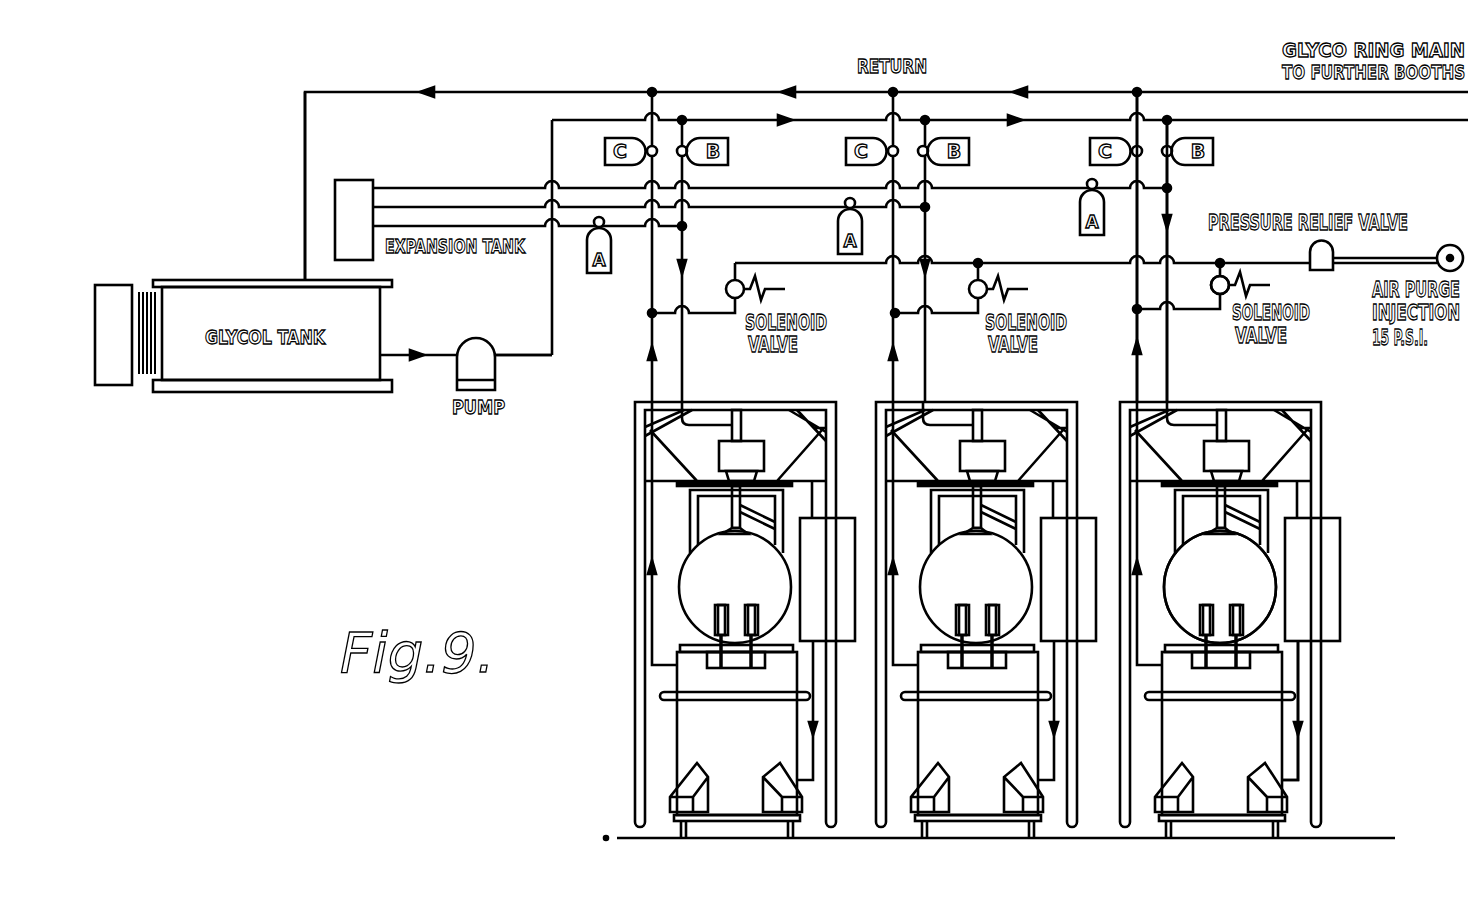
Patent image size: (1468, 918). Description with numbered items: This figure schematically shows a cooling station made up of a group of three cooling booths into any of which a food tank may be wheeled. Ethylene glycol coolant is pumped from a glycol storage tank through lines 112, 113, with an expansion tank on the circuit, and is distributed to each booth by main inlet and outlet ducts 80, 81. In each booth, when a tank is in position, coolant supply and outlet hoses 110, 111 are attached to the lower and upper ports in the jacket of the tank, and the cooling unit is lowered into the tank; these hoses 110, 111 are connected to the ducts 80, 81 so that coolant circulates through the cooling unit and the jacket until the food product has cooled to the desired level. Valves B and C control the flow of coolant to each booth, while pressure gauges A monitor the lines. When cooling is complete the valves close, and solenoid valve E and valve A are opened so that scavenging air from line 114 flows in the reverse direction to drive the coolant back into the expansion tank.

The line 113 is at (305, 178).
The line 112 is at (519, 359).
The main outlet duct 81 is at (1136, 368).
The main inlet duct 80 is at (1167, 378).
The solenoid valve E is at (1211, 284).
The line 114 is at (1360, 259).
The coolant outlet hose 111 is at (1140, 601).
The coolant supply hose 110 is at (1303, 672).